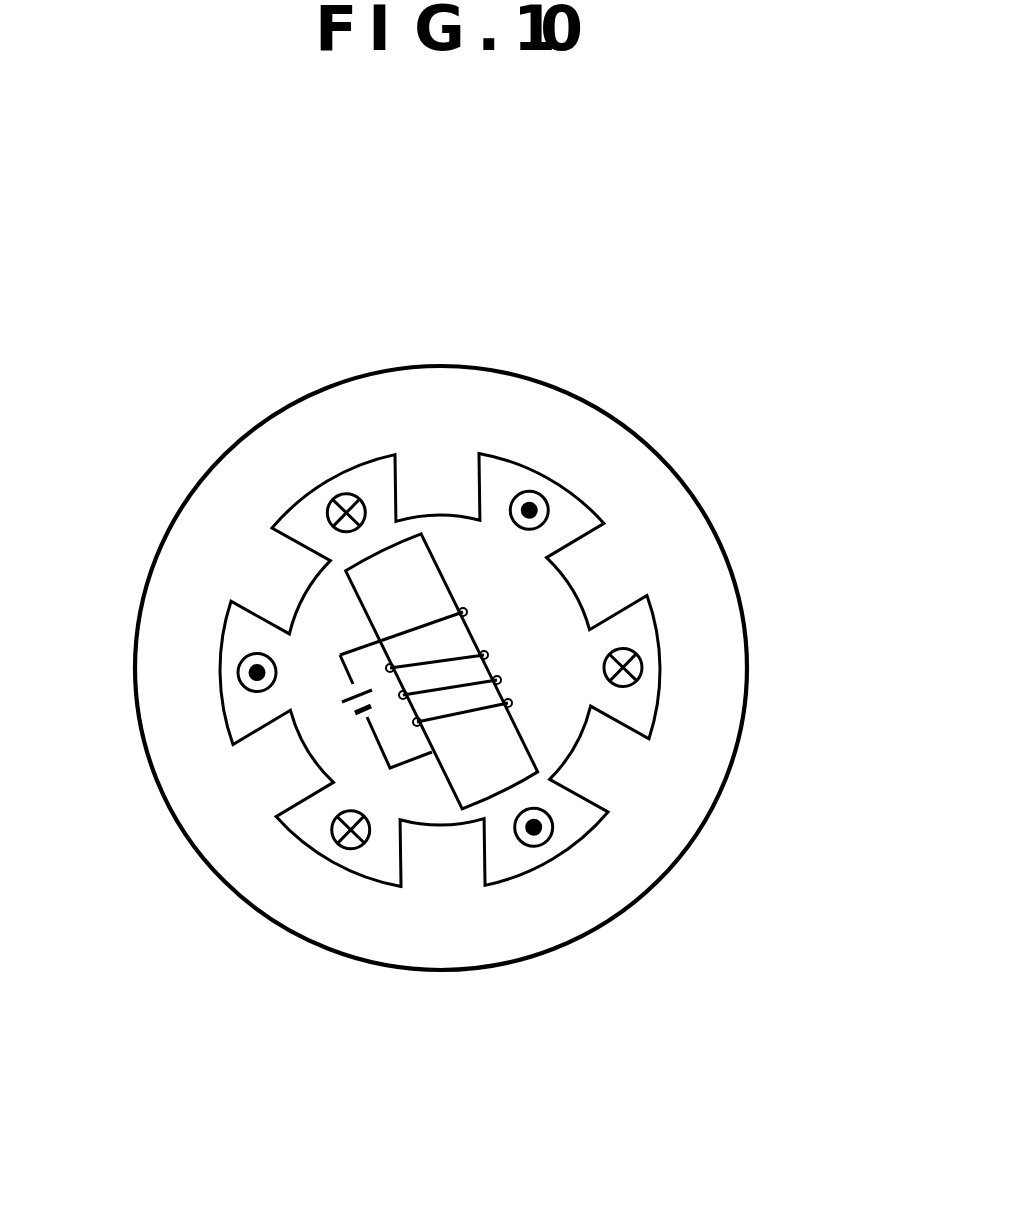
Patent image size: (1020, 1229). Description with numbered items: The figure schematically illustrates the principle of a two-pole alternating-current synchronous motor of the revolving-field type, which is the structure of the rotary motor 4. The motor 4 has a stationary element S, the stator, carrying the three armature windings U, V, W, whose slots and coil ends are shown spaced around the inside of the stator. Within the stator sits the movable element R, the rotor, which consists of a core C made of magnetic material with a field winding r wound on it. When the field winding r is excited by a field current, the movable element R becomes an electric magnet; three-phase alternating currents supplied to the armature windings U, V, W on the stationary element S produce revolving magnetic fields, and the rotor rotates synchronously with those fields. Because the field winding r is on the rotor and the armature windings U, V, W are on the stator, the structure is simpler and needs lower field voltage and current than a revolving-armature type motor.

The rotary motor 4 is at (454, 353).
The stationary element S is at (543, 380).
The movable element R is at (362, 607).
The core C is at (415, 576).
The field winding r is at (468, 717).
The armature winding U is at (240, 652).
The armature winding V is at (602, 458).
The armature winding W is at (336, 446).